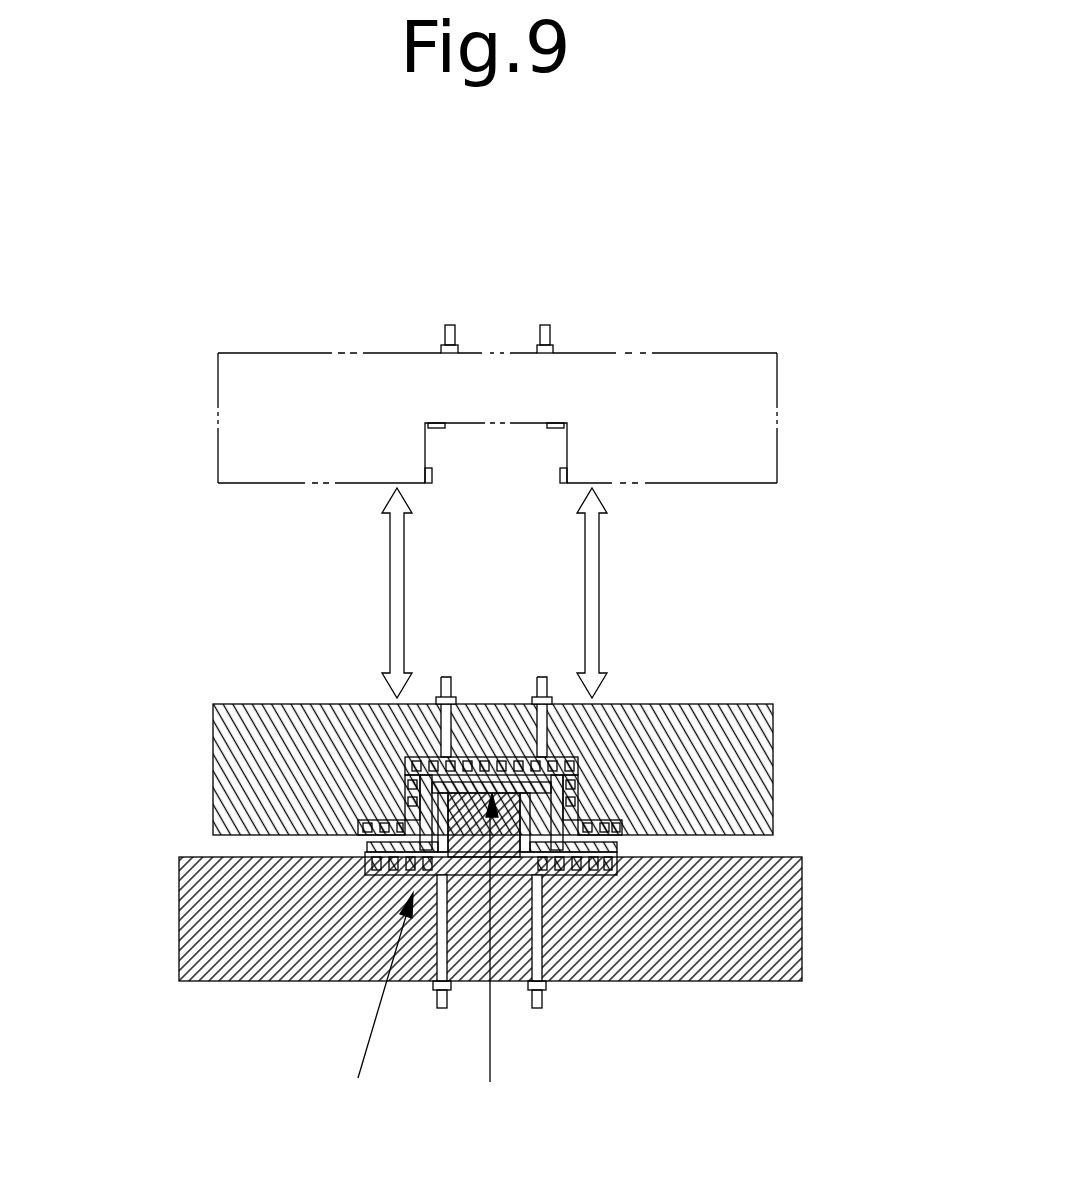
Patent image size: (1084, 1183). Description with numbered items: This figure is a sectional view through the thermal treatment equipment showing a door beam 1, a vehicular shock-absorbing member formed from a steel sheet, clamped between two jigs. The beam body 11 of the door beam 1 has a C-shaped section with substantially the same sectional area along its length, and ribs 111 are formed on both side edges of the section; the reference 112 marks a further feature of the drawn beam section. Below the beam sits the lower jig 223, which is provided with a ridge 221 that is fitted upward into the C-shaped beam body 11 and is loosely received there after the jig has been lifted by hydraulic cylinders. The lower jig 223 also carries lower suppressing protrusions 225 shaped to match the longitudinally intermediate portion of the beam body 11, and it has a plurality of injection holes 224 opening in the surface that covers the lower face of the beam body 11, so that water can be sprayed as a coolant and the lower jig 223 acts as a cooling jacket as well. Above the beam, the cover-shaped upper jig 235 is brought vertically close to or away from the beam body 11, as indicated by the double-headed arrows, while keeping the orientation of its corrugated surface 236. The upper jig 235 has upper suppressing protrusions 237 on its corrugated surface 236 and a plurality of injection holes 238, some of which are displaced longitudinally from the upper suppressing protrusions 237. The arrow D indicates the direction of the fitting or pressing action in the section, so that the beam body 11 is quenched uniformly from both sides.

The door beam 1 is at (490, 959).
The beam body 11 is at (568, 800).
The rib 111 is at (378, 900).
The elastic member 112 is at (400, 763).
The ridge 221 is at (498, 830).
The lower jig 223 is at (749, 948).
The injection hole 224 is at (385, 863).
The lower suppressing protrusion 225 is at (367, 845).
The upper jig 235 is at (735, 750).
The corrugated surface 236 is at (405, 803).
The upper suppressing protrusion 237 is at (563, 768).
The injection hole 238 is at (580, 782).
The pressing direction D is at (381, 1006).